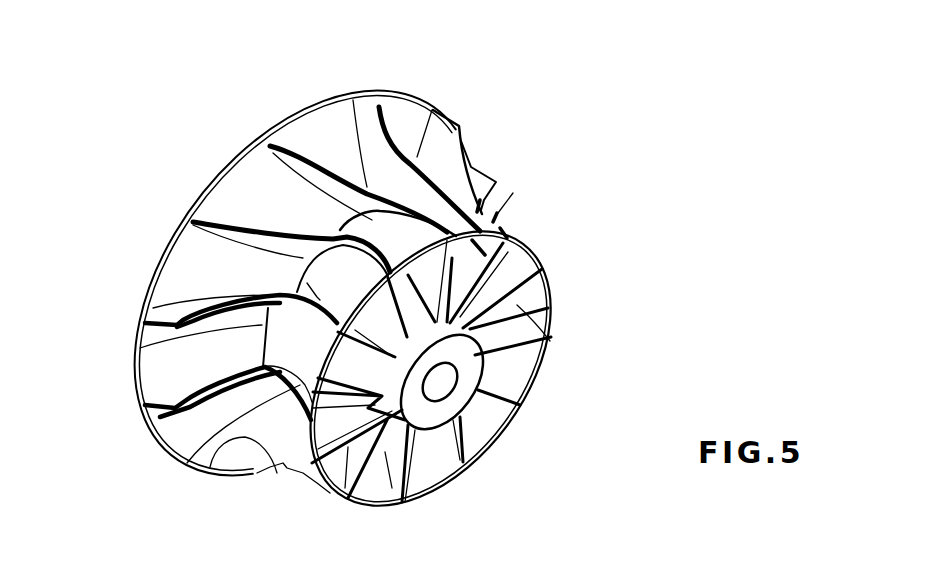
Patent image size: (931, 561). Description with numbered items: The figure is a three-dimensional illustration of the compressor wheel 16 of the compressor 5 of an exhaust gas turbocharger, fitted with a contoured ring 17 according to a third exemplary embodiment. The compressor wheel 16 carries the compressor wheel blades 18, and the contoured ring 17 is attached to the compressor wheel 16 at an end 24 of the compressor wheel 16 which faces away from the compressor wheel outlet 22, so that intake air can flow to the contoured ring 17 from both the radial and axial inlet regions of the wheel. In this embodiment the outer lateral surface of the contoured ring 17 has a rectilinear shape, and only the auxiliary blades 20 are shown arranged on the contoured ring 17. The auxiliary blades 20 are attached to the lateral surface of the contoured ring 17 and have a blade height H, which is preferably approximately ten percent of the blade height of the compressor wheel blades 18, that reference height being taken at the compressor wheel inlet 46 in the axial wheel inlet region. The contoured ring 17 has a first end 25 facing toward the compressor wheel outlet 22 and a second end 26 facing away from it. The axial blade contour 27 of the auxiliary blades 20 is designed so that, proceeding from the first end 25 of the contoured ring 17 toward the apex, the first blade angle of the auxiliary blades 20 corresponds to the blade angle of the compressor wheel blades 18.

The compressor 5 is at (632, 110).
The compressor wheel 16 is at (420, 92).
The contoured ring 17 is at (555, 302).
The compressor wheel blades 18 is at (440, 133).
The auxiliary blades 20 is at (310, 287).
The compressor wheel outlet 22 is at (480, 152).
The end of the compressor wheel 24 is at (218, 173).
The first end of the contoured ring 25 is at (263, 333).
The second end of the contoured ring 26 is at (497, 440).
The axial blade contour 27 is at (197, 465).
The compressor wheel inlet 46 is at (497, 375).
The blade height H is at (506, 236).